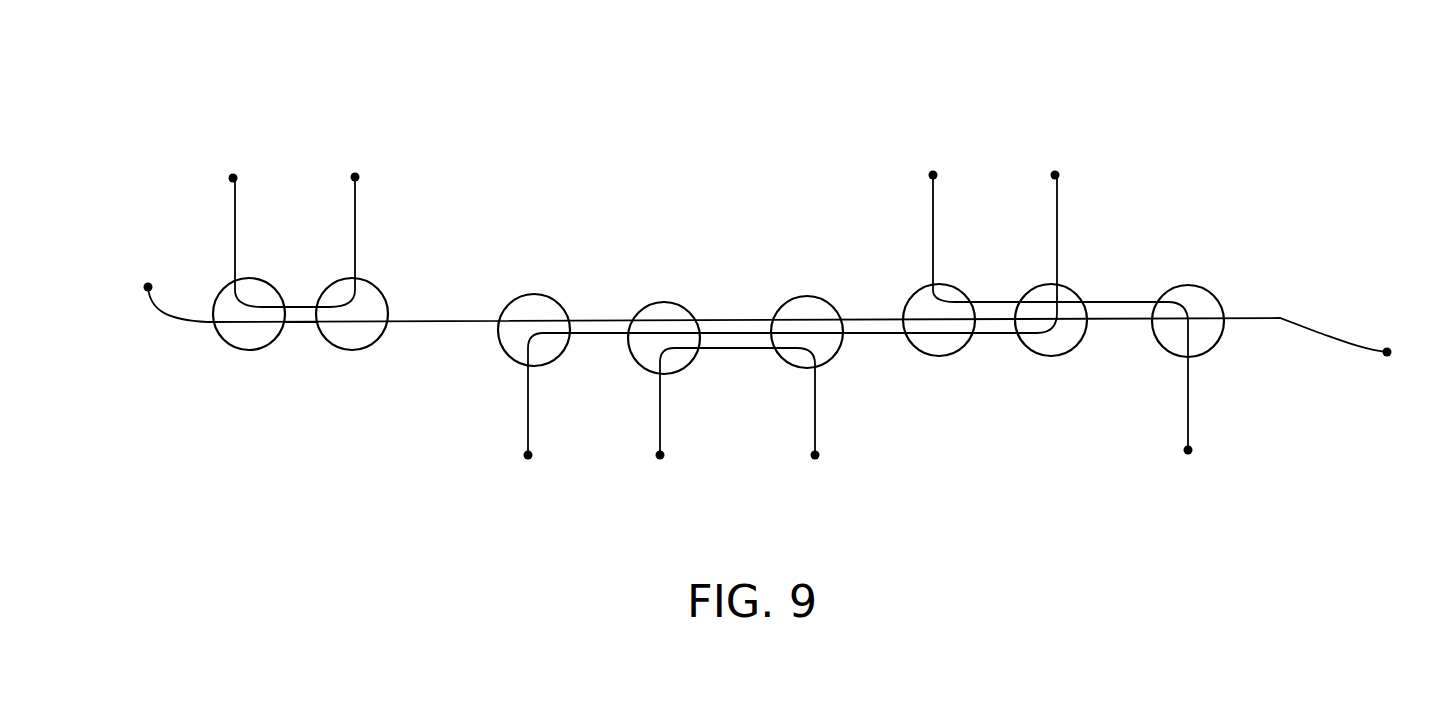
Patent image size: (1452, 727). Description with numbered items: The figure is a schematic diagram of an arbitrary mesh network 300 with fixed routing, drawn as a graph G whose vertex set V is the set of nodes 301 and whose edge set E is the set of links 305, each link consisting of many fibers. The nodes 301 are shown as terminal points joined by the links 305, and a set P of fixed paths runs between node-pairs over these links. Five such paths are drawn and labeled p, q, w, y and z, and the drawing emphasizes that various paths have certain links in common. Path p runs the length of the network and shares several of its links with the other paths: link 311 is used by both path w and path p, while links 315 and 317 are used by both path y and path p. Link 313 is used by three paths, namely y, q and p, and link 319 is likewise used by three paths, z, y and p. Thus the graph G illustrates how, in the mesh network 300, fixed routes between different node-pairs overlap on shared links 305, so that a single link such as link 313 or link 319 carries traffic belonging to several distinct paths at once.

The mesh network 300 is at (530, 102).
The nodes 301 is at (787, 316).
The links 305 is at (433, 320).
The link 311 is at (305, 324).
The link 313 is at (742, 350).
The link 315 is at (600, 335).
The link 317 is at (875, 335).
The link 319 is at (997, 333).
The graph G is at (136, 107).
The path w is at (354, 236).
The path q is at (817, 413).
The path y is at (1058, 222).
The path z is at (1187, 412).
The path p is at (1281, 315).